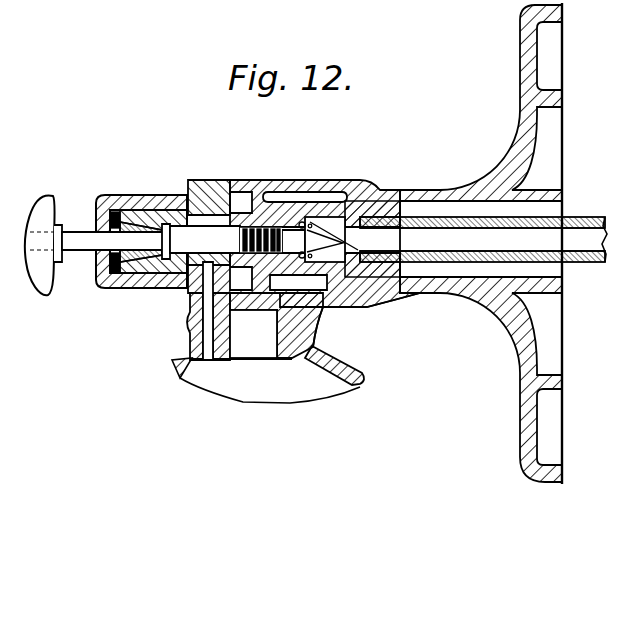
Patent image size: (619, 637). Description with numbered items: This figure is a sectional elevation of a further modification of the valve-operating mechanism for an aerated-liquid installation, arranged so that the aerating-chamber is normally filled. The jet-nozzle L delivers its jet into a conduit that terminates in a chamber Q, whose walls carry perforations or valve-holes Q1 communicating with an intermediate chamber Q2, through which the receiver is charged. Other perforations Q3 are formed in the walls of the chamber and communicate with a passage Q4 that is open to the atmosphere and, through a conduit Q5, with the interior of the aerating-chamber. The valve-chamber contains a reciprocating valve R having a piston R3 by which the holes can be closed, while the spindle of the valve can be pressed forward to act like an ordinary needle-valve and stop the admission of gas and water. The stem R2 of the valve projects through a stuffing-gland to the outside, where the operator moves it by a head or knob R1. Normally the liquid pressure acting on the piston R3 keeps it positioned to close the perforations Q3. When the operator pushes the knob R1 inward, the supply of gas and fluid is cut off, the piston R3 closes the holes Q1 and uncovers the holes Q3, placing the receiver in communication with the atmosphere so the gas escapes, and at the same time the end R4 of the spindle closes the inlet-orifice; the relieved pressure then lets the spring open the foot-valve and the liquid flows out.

The reciprocating valve R is at (198, 240).
The head or knob R1 is at (47, 217).
The stem of the valve R2 is at (121, 228).
The piston R3 is at (266, 310).
The end of the spindle R4 is at (372, 213).
The chamber Q is at (307, 228).
The perforations or valve-holes Q1 is at (348, 283).
The intermediate chamber Q2 is at (297, 283).
The other perforations Q3 is at (250, 230).
The passage Q4 is at (250, 312).
The conduit Q5 is at (208, 330).
The jet-nozzle L is at (330, 240).